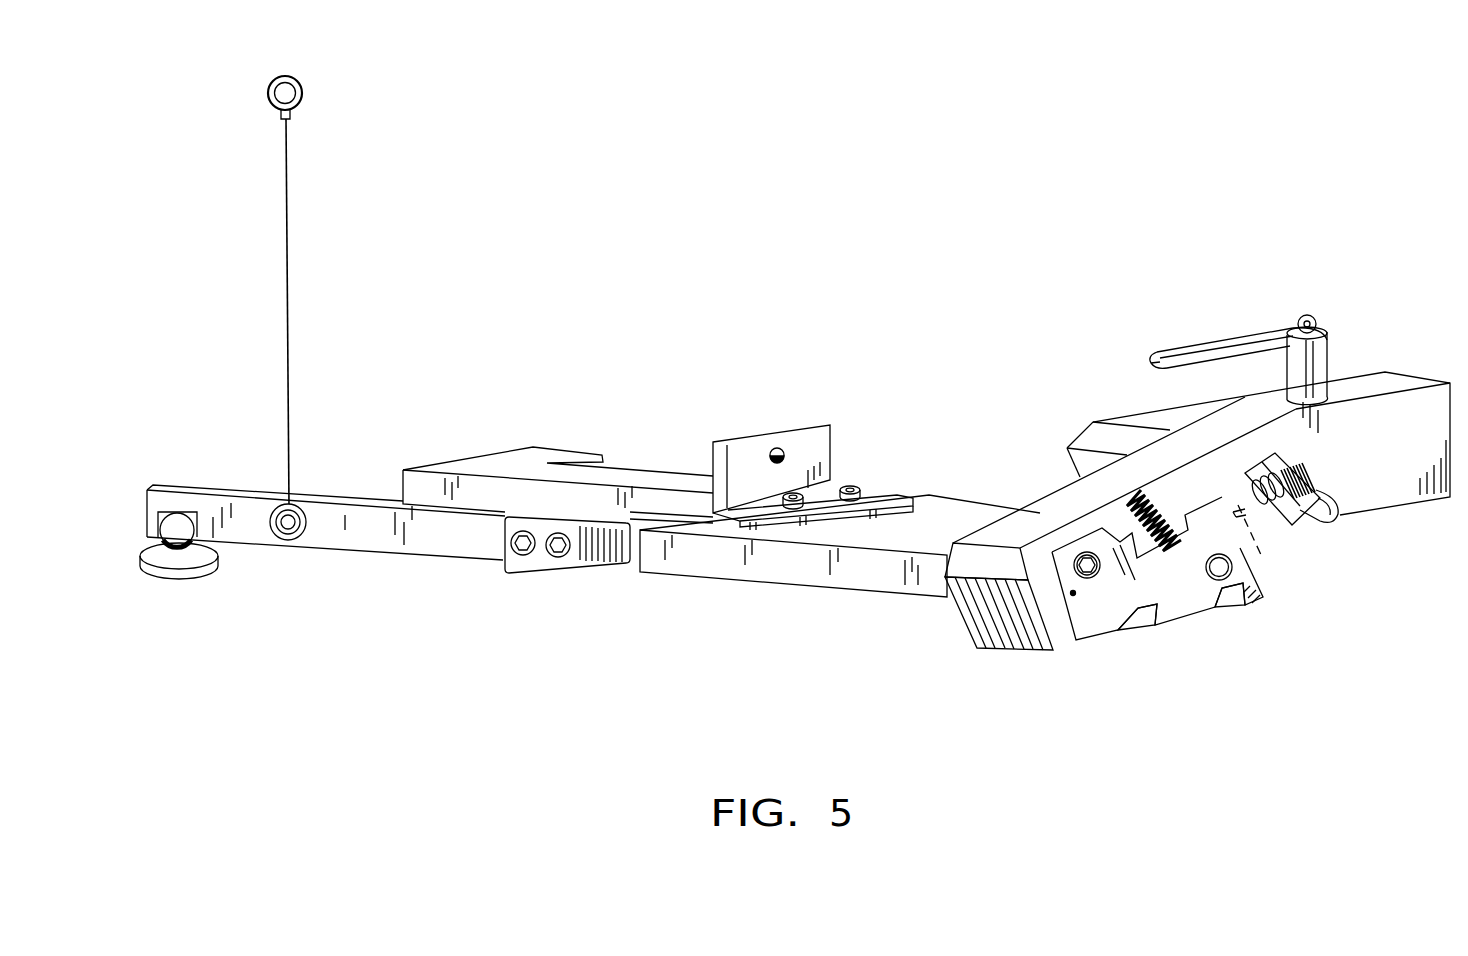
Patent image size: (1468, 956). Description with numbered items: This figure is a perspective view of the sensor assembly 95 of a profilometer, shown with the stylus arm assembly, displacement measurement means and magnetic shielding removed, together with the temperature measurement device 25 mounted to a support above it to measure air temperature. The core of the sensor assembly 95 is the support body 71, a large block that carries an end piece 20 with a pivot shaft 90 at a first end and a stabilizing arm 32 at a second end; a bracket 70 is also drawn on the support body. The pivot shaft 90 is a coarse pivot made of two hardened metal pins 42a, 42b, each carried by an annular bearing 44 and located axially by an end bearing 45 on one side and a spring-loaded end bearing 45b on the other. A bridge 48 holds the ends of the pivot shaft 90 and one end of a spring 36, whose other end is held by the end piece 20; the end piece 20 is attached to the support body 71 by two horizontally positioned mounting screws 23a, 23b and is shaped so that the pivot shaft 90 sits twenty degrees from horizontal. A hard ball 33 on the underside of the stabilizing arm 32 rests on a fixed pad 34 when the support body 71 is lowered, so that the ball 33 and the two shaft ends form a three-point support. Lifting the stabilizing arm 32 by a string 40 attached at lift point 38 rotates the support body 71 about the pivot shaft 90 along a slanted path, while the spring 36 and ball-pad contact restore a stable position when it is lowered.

The end piece 20 is at (1180, 592).
The mounting screw 23a is at (1106, 612).
The mounting screw 23b is at (1219, 610).
The temperature measurement device 25 is at (1166, 313).
The stabilizing arm 32 is at (366, 544).
The hard ball 33 is at (161, 527).
The pad 34 is at (180, 582).
The spring 36 is at (1173, 543).
The lift point 38 is at (283, 541).
The string 40 is at (291, 458).
The hardened metal pin 42a is at (1100, 603).
The hardened metal pin 42b is at (1273, 544).
The annular bearing 44 is at (1292, 524).
The end bearing 45 is at (1266, 472).
The spring-loaded end bearing 45b is at (1326, 515).
The bridge 48 is at (1044, 511).
The bracket 70 is at (748, 448).
The support body 71 is at (968, 521).
The pivot shaft 90 is at (1309, 489).
The sensor assembly 95 is at (582, 250).